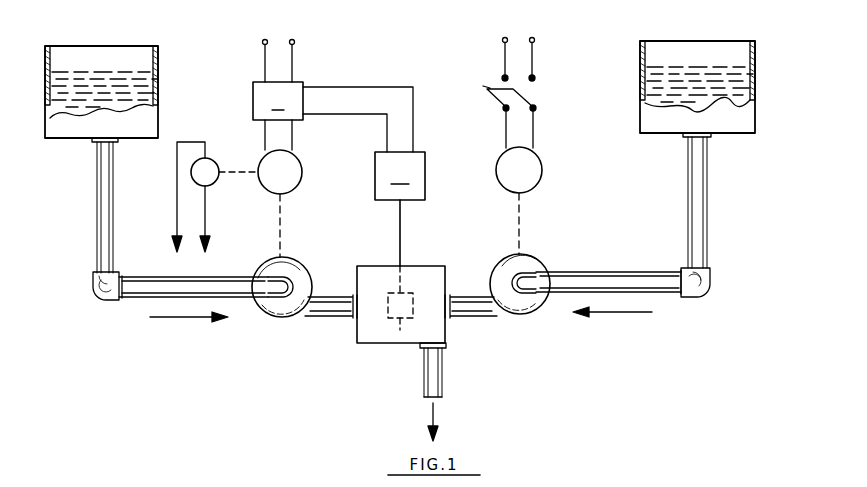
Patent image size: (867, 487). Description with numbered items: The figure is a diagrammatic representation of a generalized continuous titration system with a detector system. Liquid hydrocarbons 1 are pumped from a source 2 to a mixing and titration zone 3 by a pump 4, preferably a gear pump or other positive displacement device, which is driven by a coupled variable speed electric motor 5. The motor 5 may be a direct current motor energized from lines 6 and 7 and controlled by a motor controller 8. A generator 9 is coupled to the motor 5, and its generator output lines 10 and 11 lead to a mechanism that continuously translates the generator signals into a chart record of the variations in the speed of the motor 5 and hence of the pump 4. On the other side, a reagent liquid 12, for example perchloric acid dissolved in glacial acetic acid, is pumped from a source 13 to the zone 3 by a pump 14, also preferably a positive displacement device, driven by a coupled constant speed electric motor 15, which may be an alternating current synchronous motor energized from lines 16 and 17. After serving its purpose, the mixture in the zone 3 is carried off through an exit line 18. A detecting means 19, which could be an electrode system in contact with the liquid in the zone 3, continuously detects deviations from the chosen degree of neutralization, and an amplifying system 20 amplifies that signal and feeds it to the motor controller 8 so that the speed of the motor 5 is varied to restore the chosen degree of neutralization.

The liquid hydrocarbons 1 is at (115, 72).
The source 2 is at (160, 78).
The mixing and titration zone 3 is at (357, 338).
The pump 4 is at (303, 262).
The variable speed electric motor 5 is at (300, 160).
The line 6 is at (262, 72).
The line 7 is at (294, 70).
The motor controller 8 is at (333, 117).
The generator 9 is at (215, 160).
The generator output line 10 is at (206, 225).
The generator output line 11 is at (176, 222).
The reagent liquid 12 is at (725, 66).
The source 13 is at (756, 75).
The pump 14 is at (505, 258).
The constant speed electric motor 15 is at (498, 160).
The line 16 is at (503, 66).
The line 17 is at (534, 64).
The exit line 18 is at (440, 378).
The detecting means 19 is at (398, 340).
The amplifying system 20 is at (400, 209).